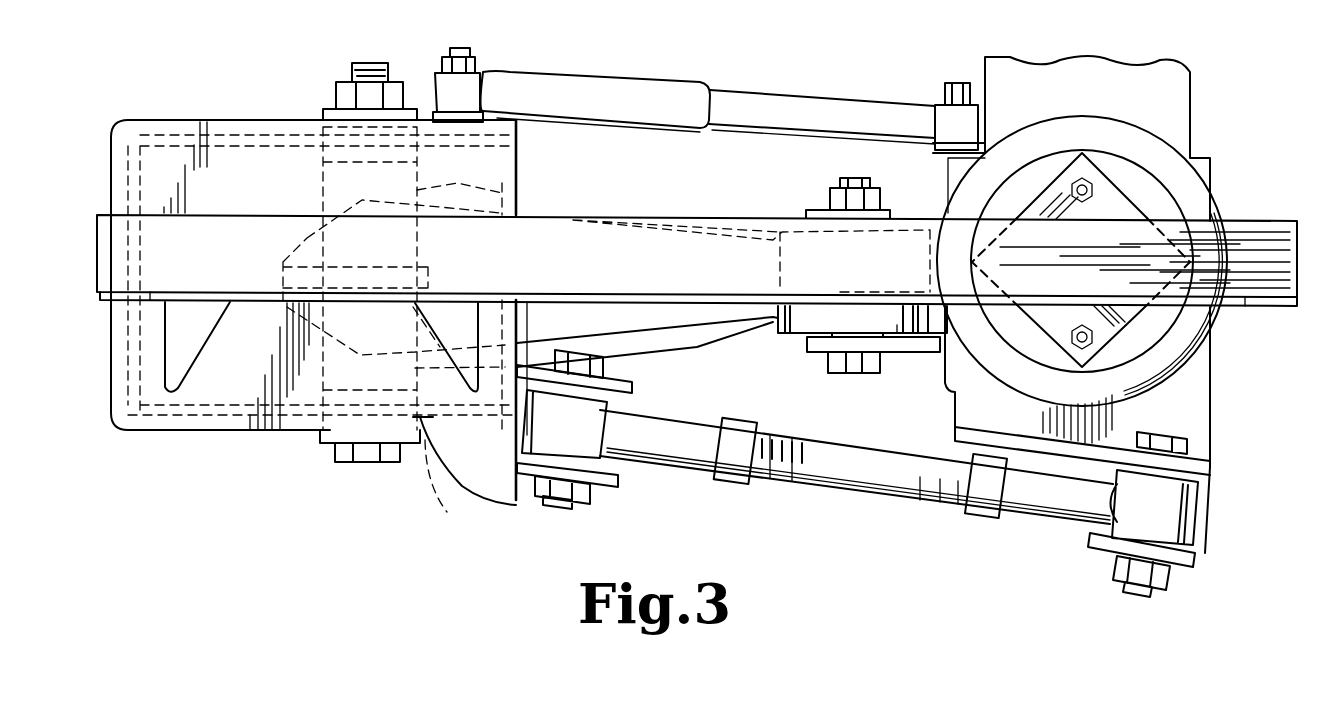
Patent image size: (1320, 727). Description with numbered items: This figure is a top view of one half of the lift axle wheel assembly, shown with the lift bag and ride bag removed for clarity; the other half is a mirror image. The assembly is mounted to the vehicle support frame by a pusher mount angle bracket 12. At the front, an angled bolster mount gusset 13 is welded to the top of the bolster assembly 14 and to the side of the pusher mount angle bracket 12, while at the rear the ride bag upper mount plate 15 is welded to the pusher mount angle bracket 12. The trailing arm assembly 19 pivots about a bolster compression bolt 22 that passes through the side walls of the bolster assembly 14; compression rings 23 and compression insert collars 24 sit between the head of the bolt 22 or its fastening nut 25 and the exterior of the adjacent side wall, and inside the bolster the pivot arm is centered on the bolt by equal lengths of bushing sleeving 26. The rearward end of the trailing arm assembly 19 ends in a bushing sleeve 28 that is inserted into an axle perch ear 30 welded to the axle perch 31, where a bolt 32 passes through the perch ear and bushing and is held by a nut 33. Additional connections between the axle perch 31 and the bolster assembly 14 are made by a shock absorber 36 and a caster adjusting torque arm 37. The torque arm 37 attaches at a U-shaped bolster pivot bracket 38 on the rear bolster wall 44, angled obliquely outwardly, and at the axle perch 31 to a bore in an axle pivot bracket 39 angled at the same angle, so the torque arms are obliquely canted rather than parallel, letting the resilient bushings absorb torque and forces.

The pusher mount angle bracket 12 is at (97, 270).
The bolster mount gusset 13 is at (165, 366).
The bolster assembly 14 is at (190, 436).
The ride bag upper mount plate 15 is at (1130, 193).
The trailing arm assembly 19 is at (670, 352).
The bolster compression bolt 22 is at (362, 463).
The compression ring 23 is at (315, 443).
The compression insert collar 24 is at (464, 482).
The fastening nut 25 is at (336, 92).
The bushing sleeving 26 is at (322, 195).
The bushing sleeve 28 is at (897, 328).
The axle perch ear 30 is at (912, 352).
The axle perch 31 is at (1210, 421).
The bolt 32 is at (850, 375).
The nut 33 is at (826, 192).
The shock absorber 36 is at (548, 72).
The caster adjusting torque arm 37 is at (692, 472).
The bolster pivot bracket 38 is at (603, 487).
The axle pivot bracket 39 is at (1180, 577).
The rear bolster wall 44 is at (530, 500).